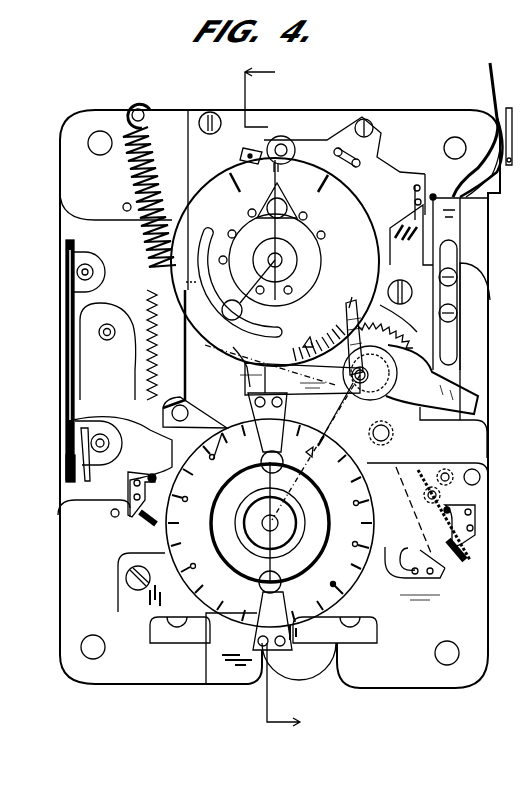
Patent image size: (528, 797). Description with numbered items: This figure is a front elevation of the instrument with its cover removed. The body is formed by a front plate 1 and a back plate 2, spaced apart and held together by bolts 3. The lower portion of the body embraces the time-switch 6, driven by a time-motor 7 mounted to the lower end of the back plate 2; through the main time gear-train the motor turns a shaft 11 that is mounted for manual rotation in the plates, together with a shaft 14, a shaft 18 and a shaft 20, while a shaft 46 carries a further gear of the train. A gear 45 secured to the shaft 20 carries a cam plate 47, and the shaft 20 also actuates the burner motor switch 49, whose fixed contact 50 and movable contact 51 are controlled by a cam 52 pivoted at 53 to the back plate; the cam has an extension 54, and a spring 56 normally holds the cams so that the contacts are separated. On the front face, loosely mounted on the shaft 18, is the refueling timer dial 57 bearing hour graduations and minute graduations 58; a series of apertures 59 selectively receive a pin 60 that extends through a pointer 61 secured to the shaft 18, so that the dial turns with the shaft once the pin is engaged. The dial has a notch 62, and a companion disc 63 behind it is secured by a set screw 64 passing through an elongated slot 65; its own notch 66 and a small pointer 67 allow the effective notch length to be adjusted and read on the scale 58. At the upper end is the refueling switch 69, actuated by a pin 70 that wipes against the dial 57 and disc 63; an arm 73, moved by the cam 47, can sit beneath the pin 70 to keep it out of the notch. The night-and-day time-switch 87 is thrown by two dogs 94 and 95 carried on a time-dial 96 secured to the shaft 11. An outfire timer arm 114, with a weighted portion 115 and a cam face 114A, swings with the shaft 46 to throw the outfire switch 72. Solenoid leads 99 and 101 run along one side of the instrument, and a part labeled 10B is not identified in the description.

The front plate 1 is at (313, 112).
The back plate 2 is at (102, 113).
The bolts 3 is at (210, 112).
The time-switch 6 is at (272, 399).
The time-motor 7 is at (296, 670).
The pawl lever 10B is at (440, 415).
The shaft 11 is at (278, 523).
The shaft 14 is at (290, 512).
The shaft 18 is at (280, 262).
The shaft 20 is at (212, 348).
The gear 45 is at (161, 345).
The shaft 46 is at (354, 378).
The cam plate 47 is at (180, 333).
The burner motor switch 49 is at (66, 358).
The fixed contact 50 is at (91, 472).
The movable contact 51 is at (66, 472).
The cam 52 is at (122, 384).
The pivot 53 is at (110, 325).
The extension 54 is at (156, 428).
The spring 56 is at (132, 165).
The refueling timer dial 57 is at (178, 282).
The minute graduations 58 is at (332, 315).
The apertures 59 is at (325, 237).
The pin 60 is at (296, 212).
The pointer 61 is at (272, 190).
The notch 62 is at (236, 367).
The companion disc 63 is at (240, 383).
The set screw 64 is at (222, 310).
The elongated slot 65 is at (206, 248).
The notch 66 is at (355, 303).
The small pointer 67 is at (304, 348).
The refueling switch 69 is at (448, 235).
The pin 70 is at (286, 145).
The outfire switch 72 is at (462, 585).
The arm 73 is at (250, 153).
The night-and-day time-switch 87 is at (137, 519).
The dog 94 is at (248, 405).
The dog 95 is at (250, 638).
The time-dial 96 is at (360, 590).
The lead 99 is at (488, 72).
The lead 101 is at (497, 104).
The arm 114 is at (354, 381).
The cam face 114A is at (399, 433).
The weighted portion 115 is at (300, 379).